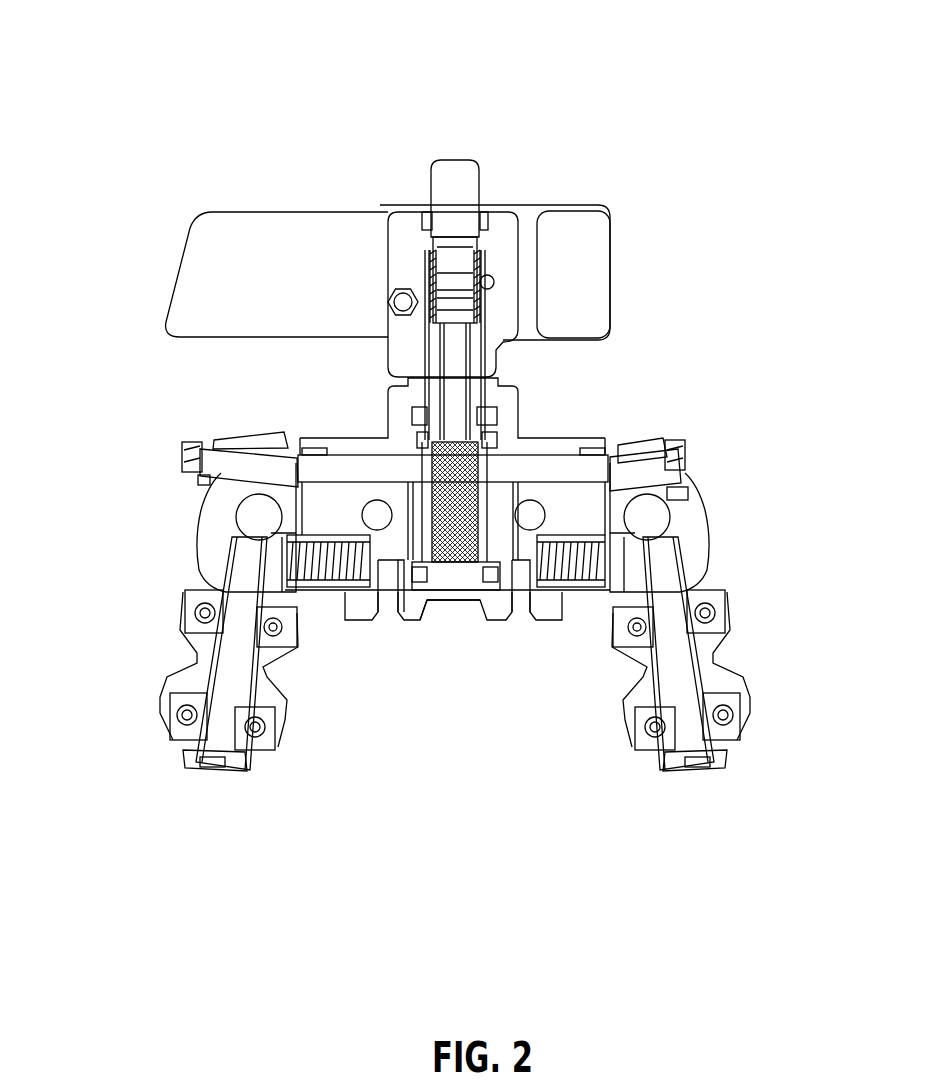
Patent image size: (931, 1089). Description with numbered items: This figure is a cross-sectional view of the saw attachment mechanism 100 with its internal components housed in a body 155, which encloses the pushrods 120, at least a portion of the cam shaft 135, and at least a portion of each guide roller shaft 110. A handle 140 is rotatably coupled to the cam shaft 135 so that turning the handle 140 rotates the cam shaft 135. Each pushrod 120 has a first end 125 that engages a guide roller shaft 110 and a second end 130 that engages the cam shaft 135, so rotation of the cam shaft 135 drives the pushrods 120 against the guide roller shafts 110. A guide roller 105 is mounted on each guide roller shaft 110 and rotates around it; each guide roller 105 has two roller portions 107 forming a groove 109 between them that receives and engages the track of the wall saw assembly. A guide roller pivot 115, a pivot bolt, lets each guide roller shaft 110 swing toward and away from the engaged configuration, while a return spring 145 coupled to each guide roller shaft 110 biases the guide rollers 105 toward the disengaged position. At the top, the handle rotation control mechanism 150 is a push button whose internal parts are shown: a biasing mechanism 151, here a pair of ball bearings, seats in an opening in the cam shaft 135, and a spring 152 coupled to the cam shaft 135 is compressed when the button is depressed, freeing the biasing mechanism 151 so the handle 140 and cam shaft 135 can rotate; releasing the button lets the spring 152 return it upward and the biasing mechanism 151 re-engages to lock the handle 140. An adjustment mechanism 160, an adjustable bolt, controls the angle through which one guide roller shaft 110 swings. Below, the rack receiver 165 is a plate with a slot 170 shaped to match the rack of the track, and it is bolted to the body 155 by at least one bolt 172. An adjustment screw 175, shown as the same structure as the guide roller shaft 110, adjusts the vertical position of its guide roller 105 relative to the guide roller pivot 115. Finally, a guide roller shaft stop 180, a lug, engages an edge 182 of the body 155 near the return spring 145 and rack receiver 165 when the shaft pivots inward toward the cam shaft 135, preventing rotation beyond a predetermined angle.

The saw attachment mechanism 100 is at (287, 31).
The guide roller 105 is at (726, 610).
The roller portions 107 is at (170, 716).
The groove 109 is at (178, 665).
The guide roller shaft 110 is at (688, 668).
The guide roller pivot 115 is at (703, 510).
The pushrod 120 is at (372, 465).
The first end 125 is at (290, 452).
The second end 130 is at (400, 623).
The cam shaft 135 is at (485, 448).
The handle 140 is at (187, 248).
The return spring 145 is at (668, 519).
The handle rotation control mechanism 150 is at (478, 175).
The biasing mechanism 151 is at (485, 405).
The spring 152 is at (572, 488).
The body 155 is at (687, 448).
The adjustment mechanism 160 is at (185, 448).
The rack receiver 165 is at (493, 622).
The slot 170 is at (452, 607).
The bolt 172 is at (380, 633).
The adjustment screw 175 is at (730, 744).
The guide roller shaft stop 180 is at (608, 610).
The edge 182 is at (605, 592).